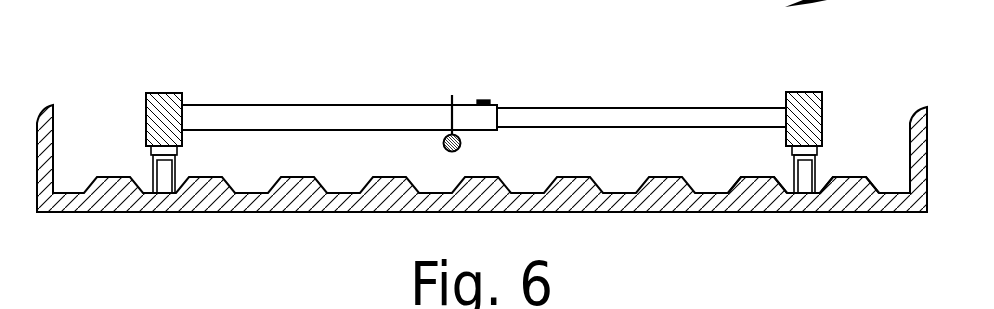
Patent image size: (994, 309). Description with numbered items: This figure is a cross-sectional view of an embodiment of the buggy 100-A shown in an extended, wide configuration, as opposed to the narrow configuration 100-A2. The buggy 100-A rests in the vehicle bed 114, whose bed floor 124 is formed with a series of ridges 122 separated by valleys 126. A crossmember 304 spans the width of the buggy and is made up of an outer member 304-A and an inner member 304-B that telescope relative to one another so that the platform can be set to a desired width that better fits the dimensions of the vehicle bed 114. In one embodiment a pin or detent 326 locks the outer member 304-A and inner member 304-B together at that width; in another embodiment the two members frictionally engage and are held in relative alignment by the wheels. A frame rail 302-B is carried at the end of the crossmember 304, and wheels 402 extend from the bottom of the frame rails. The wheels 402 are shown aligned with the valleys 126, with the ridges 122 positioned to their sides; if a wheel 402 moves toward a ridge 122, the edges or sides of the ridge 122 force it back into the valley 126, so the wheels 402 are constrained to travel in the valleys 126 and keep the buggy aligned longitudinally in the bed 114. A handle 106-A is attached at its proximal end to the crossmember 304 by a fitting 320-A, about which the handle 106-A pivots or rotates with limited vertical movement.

The vehicle bed 114 is at (918, 108).
The ridges 122 is at (755, 177).
The bed floor 124 is at (845, 177).
The valleys 126 is at (248, 192).
The frame rail 302-B is at (160, 93).
The wheels 402 is at (152, 170).
The crossmember 304 is at (255, 103).
The outer member 304-A is at (358, 106).
The inner member 304-B is at (685, 108).
The buggy 100-A is at (582, 108).
The fitting 320-A is at (452, 100).
The pin or detent 326 is at (487, 98).
The handle 106-A is at (461, 144).
The narrow configuration 100-A2 is at (845, 308).